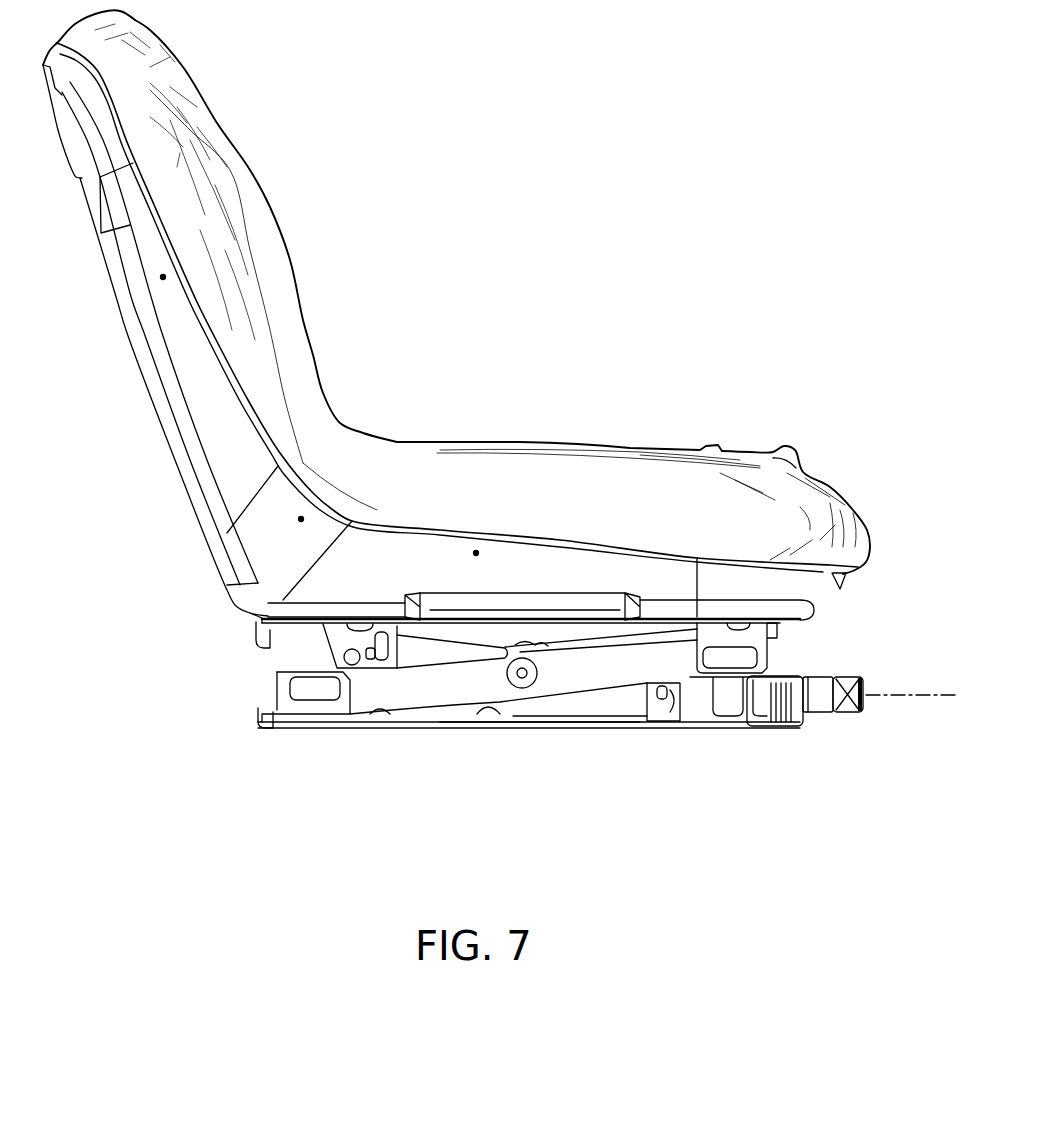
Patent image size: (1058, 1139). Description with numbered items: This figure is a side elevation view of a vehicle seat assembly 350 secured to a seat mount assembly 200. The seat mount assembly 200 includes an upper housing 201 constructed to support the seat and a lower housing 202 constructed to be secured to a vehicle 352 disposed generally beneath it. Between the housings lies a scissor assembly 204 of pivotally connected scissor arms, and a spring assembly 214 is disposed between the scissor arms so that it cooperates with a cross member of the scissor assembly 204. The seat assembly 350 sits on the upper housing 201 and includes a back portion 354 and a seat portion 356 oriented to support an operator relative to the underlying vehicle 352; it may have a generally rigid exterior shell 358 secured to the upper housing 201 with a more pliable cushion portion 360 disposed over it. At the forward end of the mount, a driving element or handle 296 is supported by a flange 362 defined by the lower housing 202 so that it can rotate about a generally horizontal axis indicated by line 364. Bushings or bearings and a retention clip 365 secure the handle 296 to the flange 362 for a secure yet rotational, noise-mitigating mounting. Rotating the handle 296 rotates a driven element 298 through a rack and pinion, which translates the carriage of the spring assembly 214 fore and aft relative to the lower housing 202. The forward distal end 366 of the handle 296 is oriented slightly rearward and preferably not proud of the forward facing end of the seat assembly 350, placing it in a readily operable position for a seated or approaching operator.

The seat mount assembly 200 is at (136, 690).
The upper housing 201 is at (260, 633).
The lower housing 202 is at (260, 723).
The scissor assembly 204 is at (433, 717).
The spring assembly 214 is at (473, 722).
The driving element 296 is at (860, 680).
The driven element 298 is at (780, 673).
The vehicle seat assembly 350 is at (208, 422).
The vehicle 352 is at (621, 769).
The back portion 354 is at (313, 38).
The seat portion 356 is at (522, 273).
The exterior shell 358 is at (220, 503).
The cushion portion 360 is at (510, 400).
The flange 362 is at (783, 727).
The axis line 364 is at (925, 693).
The retention clip 365 is at (760, 727).
The forward distal end 366 is at (862, 705).